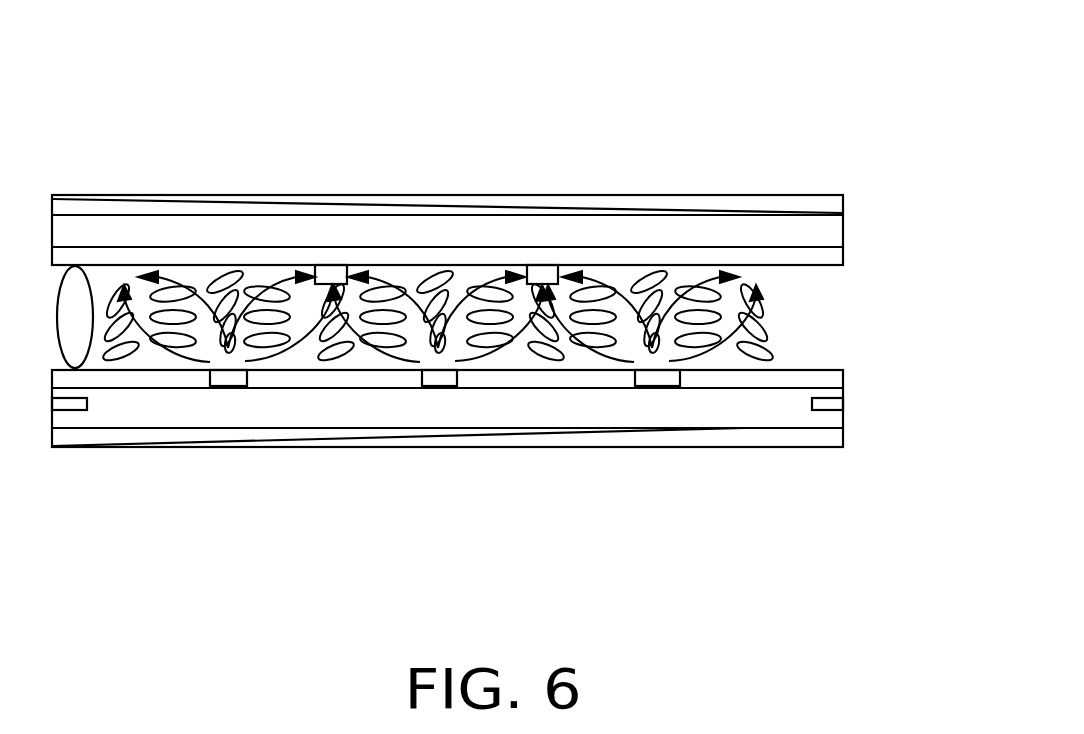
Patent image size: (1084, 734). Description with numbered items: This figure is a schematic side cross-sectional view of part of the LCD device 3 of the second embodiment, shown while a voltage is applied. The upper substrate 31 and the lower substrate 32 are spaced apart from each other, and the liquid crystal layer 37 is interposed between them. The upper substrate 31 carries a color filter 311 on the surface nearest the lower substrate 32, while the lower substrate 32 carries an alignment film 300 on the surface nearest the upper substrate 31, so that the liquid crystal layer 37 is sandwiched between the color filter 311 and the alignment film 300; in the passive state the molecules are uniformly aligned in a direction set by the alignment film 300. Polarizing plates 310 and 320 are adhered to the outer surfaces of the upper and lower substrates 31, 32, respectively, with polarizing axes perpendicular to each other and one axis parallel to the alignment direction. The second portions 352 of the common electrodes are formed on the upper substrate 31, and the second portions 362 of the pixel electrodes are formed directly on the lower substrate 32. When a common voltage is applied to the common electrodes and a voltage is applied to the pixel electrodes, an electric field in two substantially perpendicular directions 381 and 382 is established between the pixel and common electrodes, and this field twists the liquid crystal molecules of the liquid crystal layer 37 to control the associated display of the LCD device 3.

The LCD device 3 is at (427, 33).
The upper substrate 31 is at (506, 229).
The polarizing plate 310 is at (830, 203).
The color filter 311 is at (830, 257).
The lower substrate 32 is at (833, 418).
The polarizing plate 320 is at (833, 438).
The alignment film 300 is at (504, 398).
The second portions of common electrode 352 is at (334, 278).
The second portions of pixel electrode 362 is at (233, 380).
The liquid crystal layer 37 is at (755, 352).
The electric field direction 381 is at (280, 282).
The electric field direction 382 is at (607, 352).